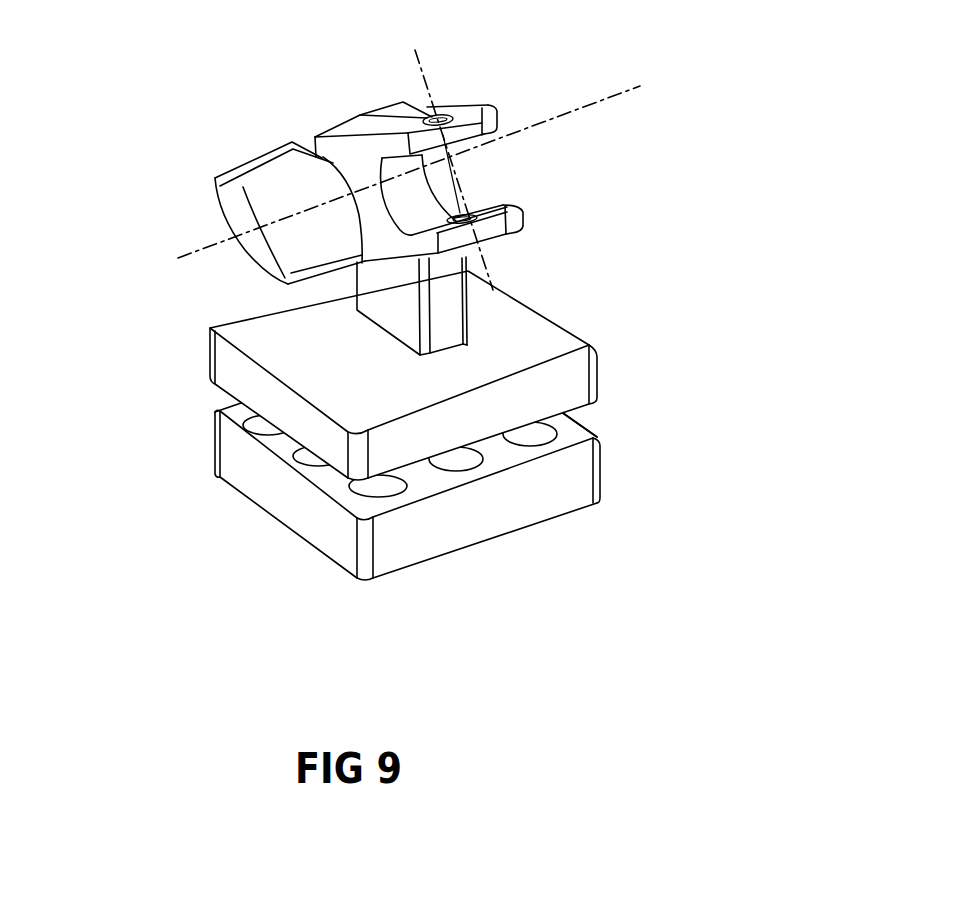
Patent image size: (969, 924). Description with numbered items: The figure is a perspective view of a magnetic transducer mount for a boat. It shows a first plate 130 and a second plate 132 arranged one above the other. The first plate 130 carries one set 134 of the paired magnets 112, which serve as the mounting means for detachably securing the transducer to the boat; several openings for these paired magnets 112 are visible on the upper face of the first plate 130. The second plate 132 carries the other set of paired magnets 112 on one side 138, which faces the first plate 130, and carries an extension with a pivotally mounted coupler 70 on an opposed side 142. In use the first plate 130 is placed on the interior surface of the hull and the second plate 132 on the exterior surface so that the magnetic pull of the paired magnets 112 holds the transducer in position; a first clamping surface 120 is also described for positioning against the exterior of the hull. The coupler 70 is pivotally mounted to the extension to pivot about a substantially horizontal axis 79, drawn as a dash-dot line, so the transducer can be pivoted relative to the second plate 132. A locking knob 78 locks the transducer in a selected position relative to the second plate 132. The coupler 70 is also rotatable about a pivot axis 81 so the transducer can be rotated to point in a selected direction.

The coupler 70 is at (350, 150).
The locking knob 78 is at (270, 190).
The substantially horizontal axis 79 is at (187, 257).
The pivot axis 81 is at (441, 145).
The paired magnets 112 is at (298, 465).
The first clamping surface 120 is at (583, 409).
The first plate 130 is at (507, 501).
The second plate 132 is at (547, 382).
The set of paired magnets 134 is at (546, 436).
The side of second plate 138 is at (234, 397).
The opposed side of second plate 142 is at (261, 331).